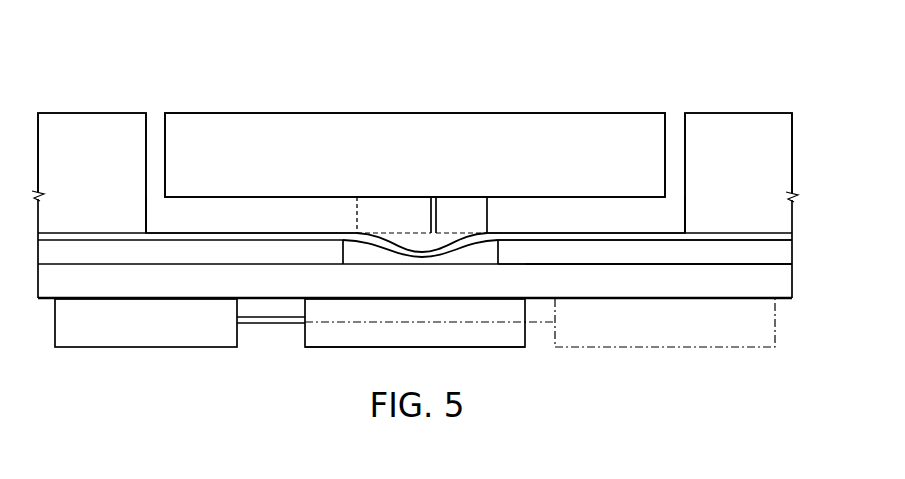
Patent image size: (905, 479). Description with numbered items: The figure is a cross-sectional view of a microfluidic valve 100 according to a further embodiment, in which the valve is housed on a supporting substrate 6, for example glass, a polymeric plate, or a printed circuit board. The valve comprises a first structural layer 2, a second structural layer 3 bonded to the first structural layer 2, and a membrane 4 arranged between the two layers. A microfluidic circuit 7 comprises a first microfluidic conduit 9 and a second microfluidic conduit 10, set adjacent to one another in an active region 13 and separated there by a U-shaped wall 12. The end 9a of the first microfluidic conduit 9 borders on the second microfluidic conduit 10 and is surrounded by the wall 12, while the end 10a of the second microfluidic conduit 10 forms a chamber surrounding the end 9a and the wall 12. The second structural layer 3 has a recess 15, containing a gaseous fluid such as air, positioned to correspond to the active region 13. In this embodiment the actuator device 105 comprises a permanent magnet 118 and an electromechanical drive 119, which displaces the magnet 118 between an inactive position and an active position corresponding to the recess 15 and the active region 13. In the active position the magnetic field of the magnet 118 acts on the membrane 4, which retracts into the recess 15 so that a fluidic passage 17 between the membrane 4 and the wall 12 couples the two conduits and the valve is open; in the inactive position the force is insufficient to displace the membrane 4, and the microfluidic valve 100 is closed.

The microfluidic valve 100 is at (692, 93).
The first structural layer 2 is at (61, 133).
The microfluidic circuit 7 is at (294, 157).
The first microfluidic conduit 9 is at (252, 221).
The second microfluidic conduit 10 is at (583, 214).
The end of the first microfluidic conduit 9a is at (376, 214).
The end of the second microfluidic conduit 10a is at (468, 212).
The wall 12 is at (430, 208).
The active region 13 is at (400, 184).
The fluidic passage 17 is at (437, 239).
The membrane 4 is at (438, 259).
The recess 15 is at (363, 254).
The second structural layer 3 is at (595, 253).
The supporting substrate 6 is at (639, 290).
The electromechanical drive 119 is at (104, 340).
The actuator device 105 is at (303, 362).
The permanent magnet 118 is at (513, 340).